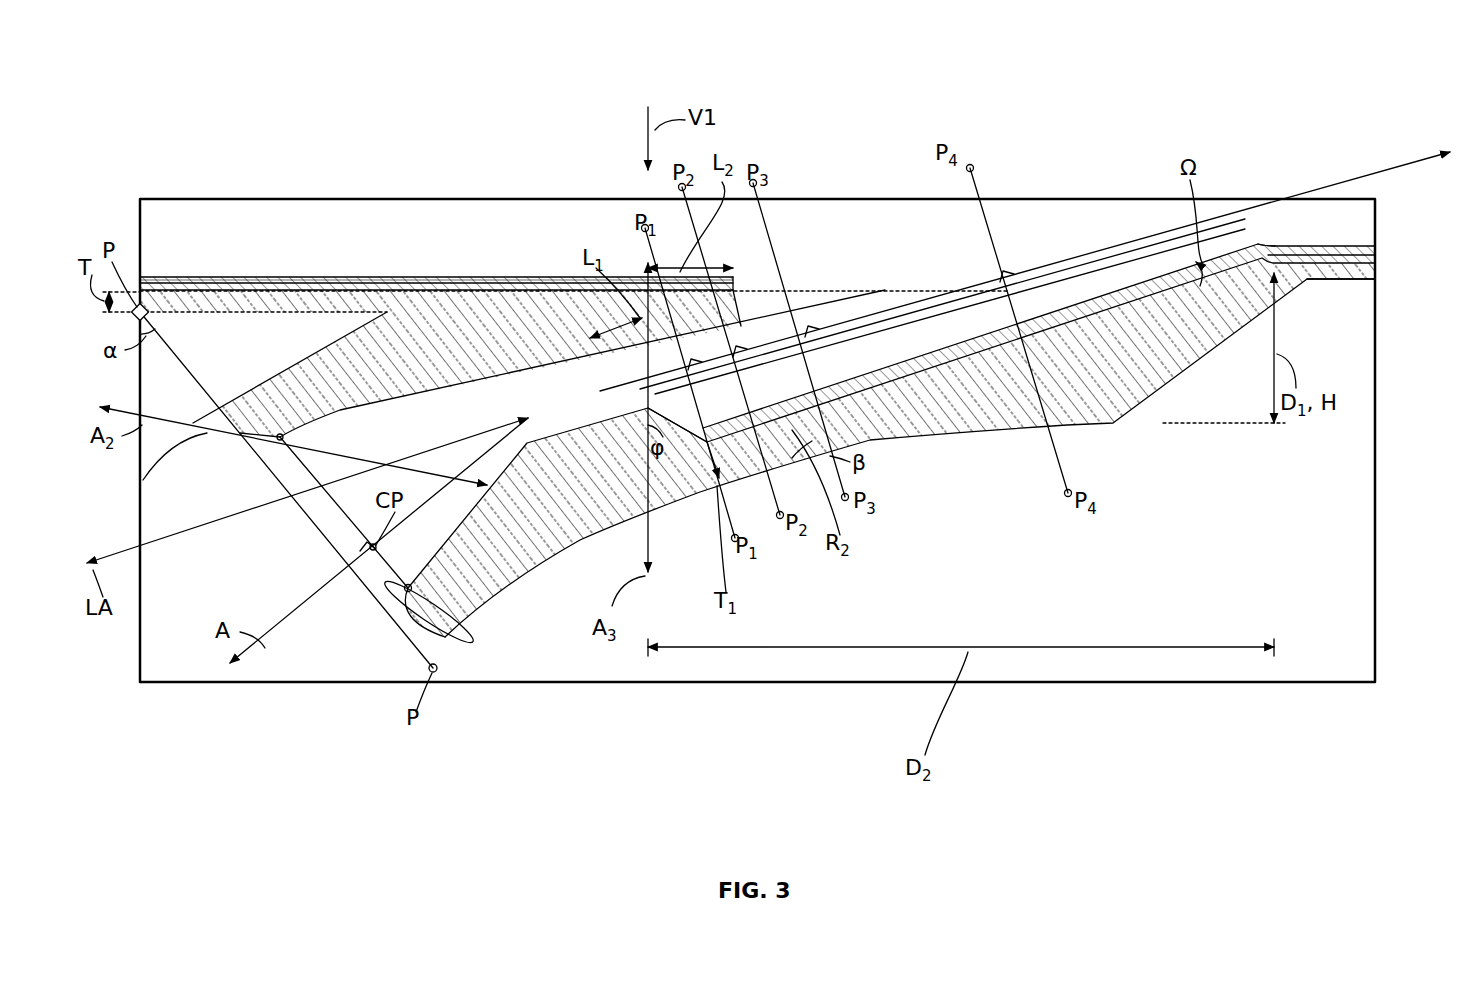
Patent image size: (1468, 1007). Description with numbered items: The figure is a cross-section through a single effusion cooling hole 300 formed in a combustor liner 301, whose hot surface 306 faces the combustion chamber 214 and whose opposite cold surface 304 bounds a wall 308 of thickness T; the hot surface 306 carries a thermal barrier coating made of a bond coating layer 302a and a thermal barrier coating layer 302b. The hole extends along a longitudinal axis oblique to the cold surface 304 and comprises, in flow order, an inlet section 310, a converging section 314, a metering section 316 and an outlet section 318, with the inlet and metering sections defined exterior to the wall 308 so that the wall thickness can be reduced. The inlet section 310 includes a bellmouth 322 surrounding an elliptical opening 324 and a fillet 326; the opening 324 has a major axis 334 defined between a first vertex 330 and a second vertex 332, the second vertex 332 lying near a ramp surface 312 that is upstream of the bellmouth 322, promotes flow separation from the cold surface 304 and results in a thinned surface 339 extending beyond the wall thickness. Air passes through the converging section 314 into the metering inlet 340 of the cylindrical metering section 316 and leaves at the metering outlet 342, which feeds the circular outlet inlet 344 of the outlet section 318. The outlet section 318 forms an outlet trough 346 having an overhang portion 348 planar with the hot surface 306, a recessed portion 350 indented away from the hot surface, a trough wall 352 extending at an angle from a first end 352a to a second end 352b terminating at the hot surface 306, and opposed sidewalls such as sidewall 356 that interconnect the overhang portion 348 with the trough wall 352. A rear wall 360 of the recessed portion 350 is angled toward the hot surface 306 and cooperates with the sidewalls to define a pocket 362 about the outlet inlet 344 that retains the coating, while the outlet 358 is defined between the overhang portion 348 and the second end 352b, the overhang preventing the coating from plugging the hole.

The combustion chamber 214 is at (1185, 104).
The effusion cooling hole 300 is at (240, 762).
The combustor liner 301 is at (1358, 285).
The bond coating layer 302a is at (545, 277).
The thermal barrier coating layer 302b is at (505, 277).
The cold surface 304 is at (253, 314).
The hot surface 306 is at (1330, 250).
The wall 308 is at (213, 300).
The inlet section 310 is at (376, 642).
The ramp surface 312 is at (142, 480).
The converging section 314 is at (485, 364).
The metering section 316 is at (658, 555).
The outlet section 318 is at (769, 261).
The bellmouth 322 is at (446, 630).
The opening 324 is at (395, 594).
The fillet 326 is at (458, 645).
The first vertex 330 is at (462, 607).
The second vertex 332 is at (283, 434).
The major axis 334 is at (308, 458).
The surface 339 is at (352, 331).
The metering inlet 340 is at (624, 424).
The metering outlet 342 is at (634, 403).
The outlet inlet 344 is at (582, 363).
The outlet trough 346 is at (976, 282).
The overhang portion 348 is at (700, 292).
The recessed portion 350 is at (740, 345).
The trough wall 352 is at (937, 382).
The first end 352a is at (746, 432).
The second end 352b is at (1260, 255).
The sidewall 356 is at (841, 284).
The outlet 358 is at (1080, 283).
The rear wall 360 is at (708, 456).
The pocket 362 is at (788, 302).